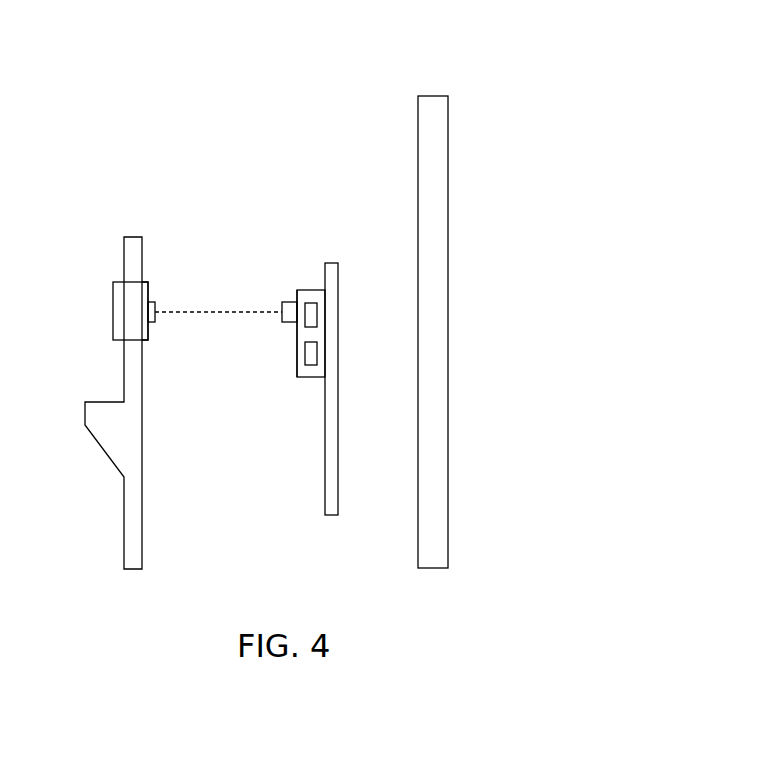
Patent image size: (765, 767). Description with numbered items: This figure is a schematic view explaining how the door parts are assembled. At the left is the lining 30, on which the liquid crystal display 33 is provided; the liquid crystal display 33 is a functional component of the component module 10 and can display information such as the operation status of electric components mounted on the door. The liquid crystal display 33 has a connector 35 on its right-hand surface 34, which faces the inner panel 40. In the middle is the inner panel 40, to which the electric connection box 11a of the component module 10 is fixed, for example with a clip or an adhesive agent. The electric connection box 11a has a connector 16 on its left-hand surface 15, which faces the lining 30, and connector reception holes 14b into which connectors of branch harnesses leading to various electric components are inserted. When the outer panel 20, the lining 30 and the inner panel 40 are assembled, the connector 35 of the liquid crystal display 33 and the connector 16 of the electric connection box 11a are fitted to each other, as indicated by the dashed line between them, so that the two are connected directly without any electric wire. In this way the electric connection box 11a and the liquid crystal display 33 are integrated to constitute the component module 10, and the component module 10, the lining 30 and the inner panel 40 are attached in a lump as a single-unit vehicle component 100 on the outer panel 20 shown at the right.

The vehicle component 100 is at (212, 121).
The component module 10 is at (257, 241).
The electric connection box 11a is at (305, 378).
The connector reception holes 14b is at (317, 317).
The surface 15 is at (297, 352).
The connector 16 is at (283, 322).
The outer panel 20 is at (432, 92).
The lining 30 is at (133, 233).
The liquid crystal display 33 is at (113, 310).
The surface 34 is at (148, 288).
The connector 35 is at (153, 303).
The inner panel 40 is at (328, 258).